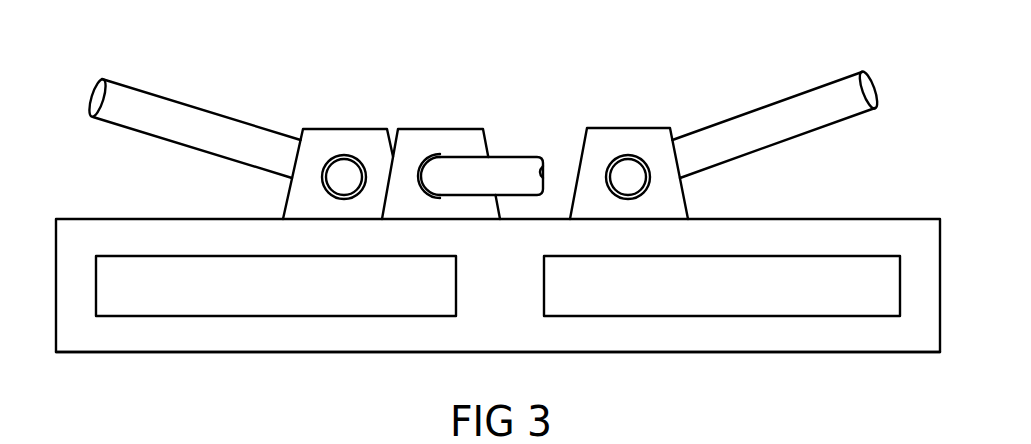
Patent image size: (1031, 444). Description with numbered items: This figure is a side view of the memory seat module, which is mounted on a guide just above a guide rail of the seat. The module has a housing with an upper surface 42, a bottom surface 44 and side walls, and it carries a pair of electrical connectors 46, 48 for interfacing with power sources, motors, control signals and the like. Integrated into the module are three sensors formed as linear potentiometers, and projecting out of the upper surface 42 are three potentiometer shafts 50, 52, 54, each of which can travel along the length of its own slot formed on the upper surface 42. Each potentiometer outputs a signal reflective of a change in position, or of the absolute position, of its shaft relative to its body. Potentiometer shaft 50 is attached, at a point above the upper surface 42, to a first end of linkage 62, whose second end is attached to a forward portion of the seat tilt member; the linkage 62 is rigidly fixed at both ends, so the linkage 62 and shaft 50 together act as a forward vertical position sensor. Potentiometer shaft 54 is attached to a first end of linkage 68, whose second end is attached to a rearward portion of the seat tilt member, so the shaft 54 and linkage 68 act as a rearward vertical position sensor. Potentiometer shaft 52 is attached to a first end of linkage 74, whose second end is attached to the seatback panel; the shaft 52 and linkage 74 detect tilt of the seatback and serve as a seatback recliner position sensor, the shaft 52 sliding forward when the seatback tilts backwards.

The upper surface 42 is at (898, 218).
The bottom surface 44 is at (852, 353).
The electrical connector 46 is at (153, 304).
The electrical connector 48 is at (872, 284).
The potentiometer shaft 50 is at (350, 133).
The potentiometer shaft 52 is at (443, 135).
The potentiometer shaft 54 is at (625, 136).
The linkage 62 is at (177, 112).
The linkage 68 is at (757, 118).
The linkage 74 is at (522, 163).